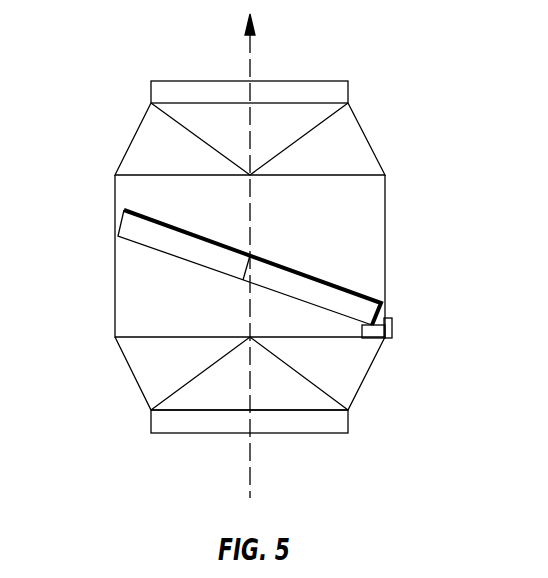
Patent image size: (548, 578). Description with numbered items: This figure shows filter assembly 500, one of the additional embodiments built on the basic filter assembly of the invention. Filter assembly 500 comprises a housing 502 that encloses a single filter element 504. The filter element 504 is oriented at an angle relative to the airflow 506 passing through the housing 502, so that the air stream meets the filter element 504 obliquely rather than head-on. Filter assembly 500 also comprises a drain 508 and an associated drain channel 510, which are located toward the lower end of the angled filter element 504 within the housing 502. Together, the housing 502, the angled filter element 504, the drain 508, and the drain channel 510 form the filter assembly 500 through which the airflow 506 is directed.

The filter assembly 500 is at (156, 43).
The housing 502 is at (132, 143).
The filter element 504 is at (337, 298).
The airflow 506 is at (248, 473).
The drain 508 is at (394, 327).
The drain channel 510 is at (378, 338).